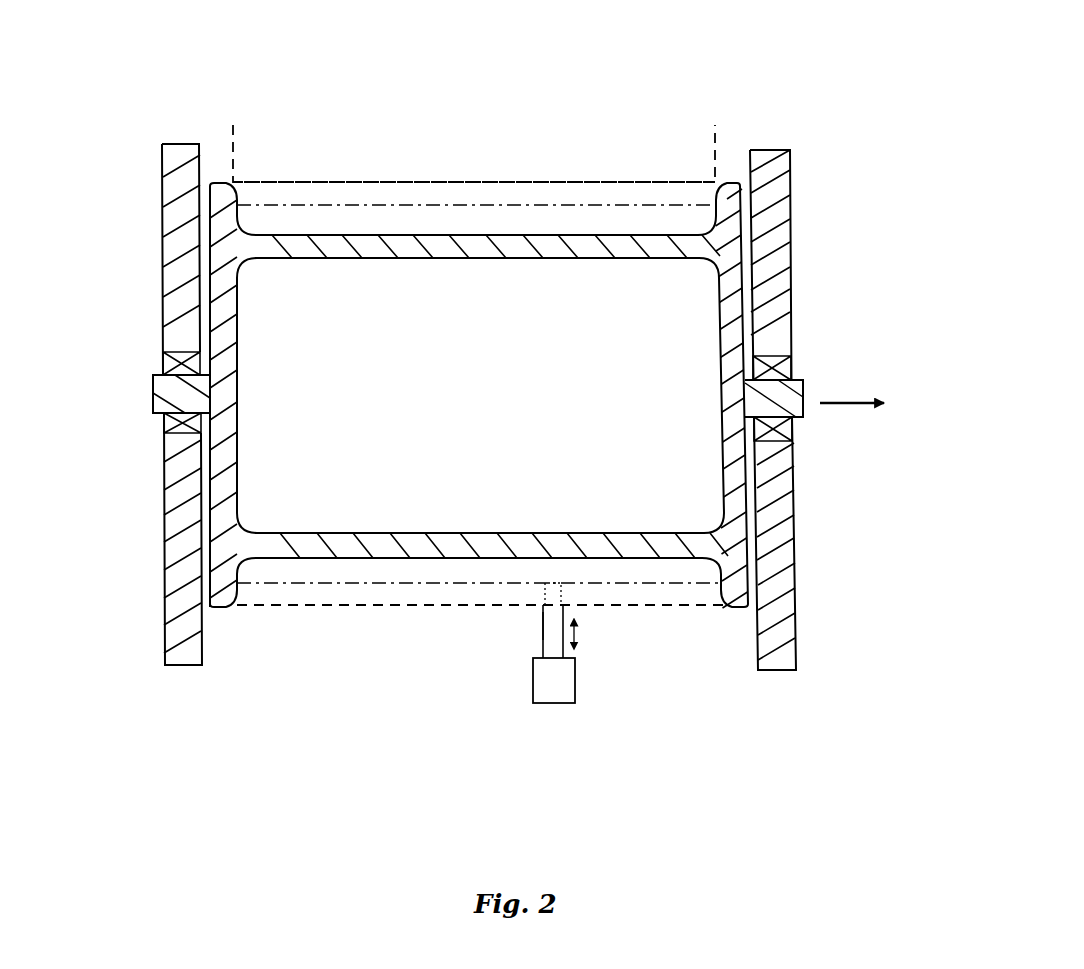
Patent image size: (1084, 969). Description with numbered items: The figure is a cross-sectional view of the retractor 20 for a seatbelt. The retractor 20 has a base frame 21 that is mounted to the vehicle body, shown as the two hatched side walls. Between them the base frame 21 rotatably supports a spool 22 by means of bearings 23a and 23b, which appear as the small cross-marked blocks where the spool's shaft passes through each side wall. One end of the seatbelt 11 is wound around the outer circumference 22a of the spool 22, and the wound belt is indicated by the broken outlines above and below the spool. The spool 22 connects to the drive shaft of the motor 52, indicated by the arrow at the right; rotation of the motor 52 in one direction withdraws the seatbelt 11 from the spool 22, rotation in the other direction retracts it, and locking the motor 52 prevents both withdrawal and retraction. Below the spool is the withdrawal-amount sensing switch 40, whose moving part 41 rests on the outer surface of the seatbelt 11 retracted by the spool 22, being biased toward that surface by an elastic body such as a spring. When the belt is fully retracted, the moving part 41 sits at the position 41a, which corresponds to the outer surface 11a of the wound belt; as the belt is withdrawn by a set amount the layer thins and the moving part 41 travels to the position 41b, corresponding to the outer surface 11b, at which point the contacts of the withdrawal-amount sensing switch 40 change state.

The retractor 20 is at (673, 78).
The base frame 21 is at (178, 155).
The spool 22 is at (608, 235).
The outer circumference 22a is at (427, 235).
The seatbelt 11 is at (285, 217).
The outer surface 11a is at (365, 183).
The outer surface 11b is at (508, 203).
The bearing 23a is at (165, 360).
The bearing 23b is at (792, 432).
The motor 52 is at (882, 411).
The withdrawal-amount sensing switch 40 is at (533, 680).
The moving part 41 is at (557, 640).
The position 41a is at (538, 625).
The position 41b is at (566, 598).